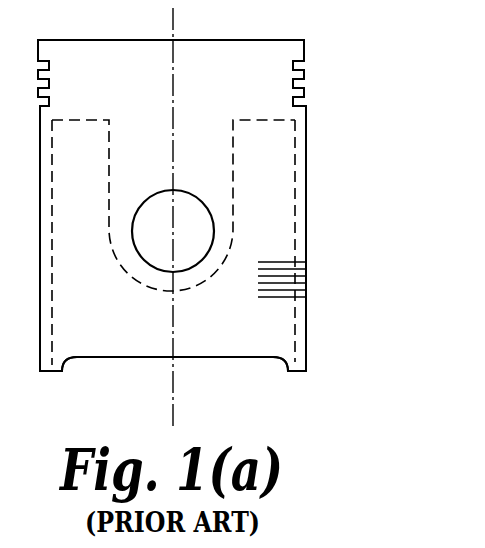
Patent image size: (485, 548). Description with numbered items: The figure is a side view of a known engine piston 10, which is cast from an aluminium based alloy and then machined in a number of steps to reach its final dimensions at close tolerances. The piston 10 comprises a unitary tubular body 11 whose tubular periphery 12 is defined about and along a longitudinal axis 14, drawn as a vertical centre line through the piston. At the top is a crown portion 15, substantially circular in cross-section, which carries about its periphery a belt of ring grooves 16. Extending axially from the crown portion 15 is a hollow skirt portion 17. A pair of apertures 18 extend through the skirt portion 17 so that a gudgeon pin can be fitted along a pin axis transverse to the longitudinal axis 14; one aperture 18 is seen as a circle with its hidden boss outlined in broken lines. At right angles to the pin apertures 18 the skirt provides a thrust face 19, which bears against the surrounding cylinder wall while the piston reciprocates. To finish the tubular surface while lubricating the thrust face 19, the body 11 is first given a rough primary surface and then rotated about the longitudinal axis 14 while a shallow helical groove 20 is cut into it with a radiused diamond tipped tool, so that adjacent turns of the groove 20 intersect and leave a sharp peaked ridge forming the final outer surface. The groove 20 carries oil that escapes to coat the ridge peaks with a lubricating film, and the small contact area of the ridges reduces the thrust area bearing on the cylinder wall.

The engine piston 10 is at (334, 103).
The tubular body 11 is at (306, 139).
The tubular periphery 12 is at (306, 213).
The longitudinal axis 14 is at (171, 389).
The crown portion 15 is at (223, 32).
The ring grooves 16 is at (316, 71).
The skirt portion 17 is at (318, 356).
The apertures 18 is at (204, 242).
The thrust face 19 is at (318, 293).
The helical groove 20 is at (277, 262).